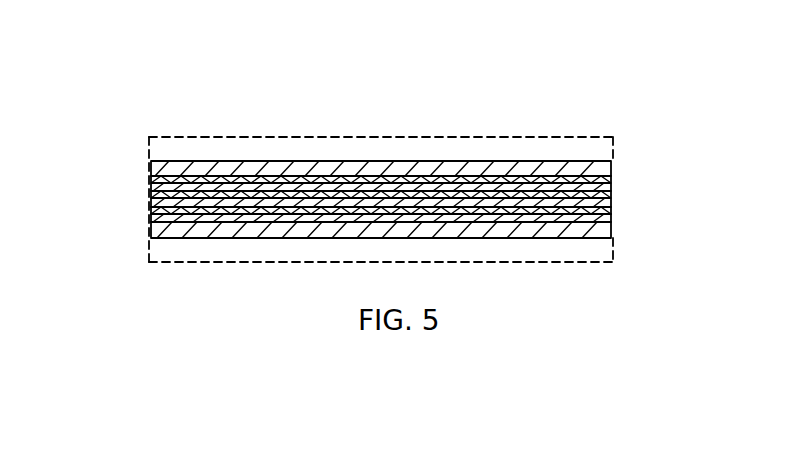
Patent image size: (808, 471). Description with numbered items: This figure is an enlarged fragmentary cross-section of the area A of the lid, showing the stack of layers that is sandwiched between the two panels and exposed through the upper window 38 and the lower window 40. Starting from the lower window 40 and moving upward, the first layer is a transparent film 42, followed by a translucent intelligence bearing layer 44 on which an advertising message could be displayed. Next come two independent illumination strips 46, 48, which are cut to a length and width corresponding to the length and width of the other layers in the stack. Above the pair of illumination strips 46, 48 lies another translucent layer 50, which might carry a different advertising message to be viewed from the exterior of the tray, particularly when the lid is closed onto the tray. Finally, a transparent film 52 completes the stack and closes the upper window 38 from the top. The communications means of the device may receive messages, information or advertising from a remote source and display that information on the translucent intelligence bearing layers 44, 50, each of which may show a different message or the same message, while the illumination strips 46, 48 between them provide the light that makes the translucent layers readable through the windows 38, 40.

The area A is at (318, 137).
The upper window 38 is at (513, 148).
The lower window 40 is at (542, 250).
The transparent film 42 is at (612, 235).
The translucent intelligence bearing layer 44 is at (613, 218).
The illumination strip 46 is at (613, 212).
The illumination strip 48 is at (613, 196).
The translucent layer 50 is at (613, 181).
The transparent film 52 is at (613, 165).